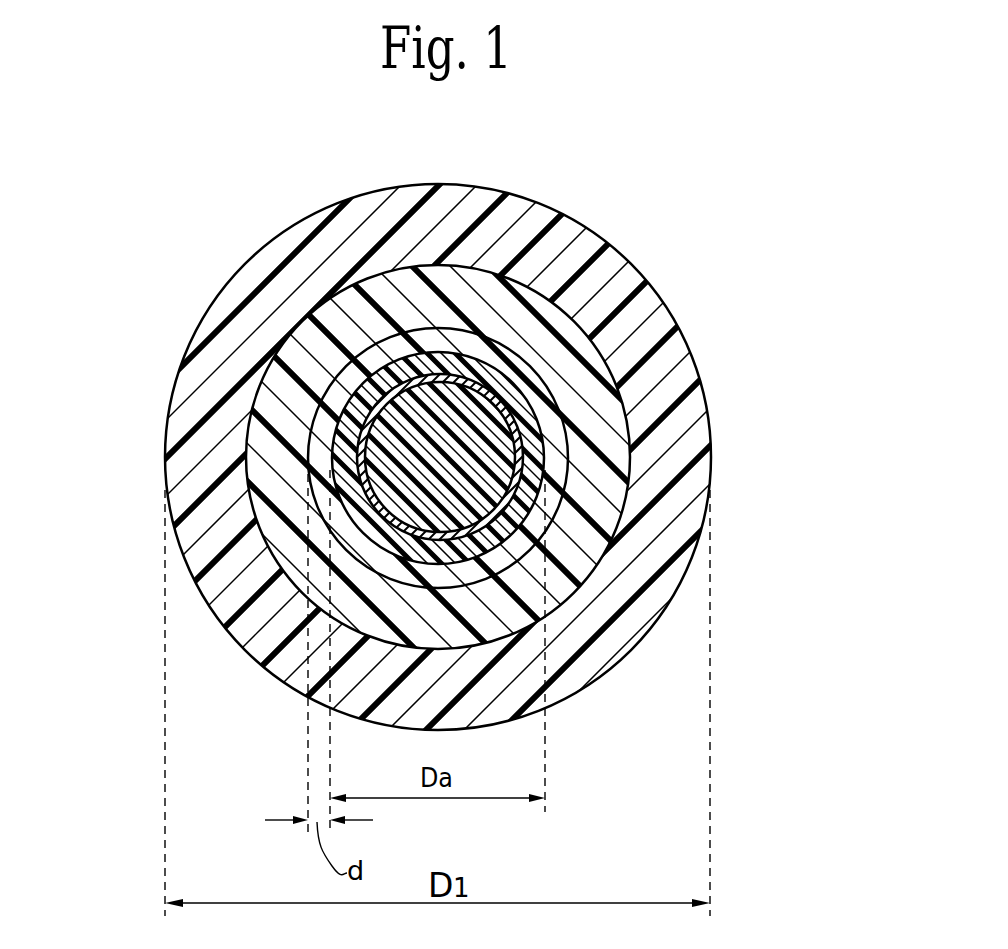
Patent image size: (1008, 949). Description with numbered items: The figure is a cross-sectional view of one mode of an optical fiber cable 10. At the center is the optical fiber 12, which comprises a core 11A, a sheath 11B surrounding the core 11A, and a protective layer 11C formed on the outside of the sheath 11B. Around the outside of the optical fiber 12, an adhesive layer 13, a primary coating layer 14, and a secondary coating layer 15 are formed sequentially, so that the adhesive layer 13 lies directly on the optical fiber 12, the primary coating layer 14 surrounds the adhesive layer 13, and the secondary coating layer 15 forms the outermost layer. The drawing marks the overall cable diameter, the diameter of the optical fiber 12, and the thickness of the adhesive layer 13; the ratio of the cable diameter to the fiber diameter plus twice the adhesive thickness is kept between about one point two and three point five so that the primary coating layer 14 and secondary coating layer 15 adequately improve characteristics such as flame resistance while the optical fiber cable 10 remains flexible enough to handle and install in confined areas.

The optical fiber cable 10 is at (123, 237).
The core 11A is at (450, 407).
The sheath 11B is at (520, 420).
The protective layer 11C is at (532, 442).
The optical fiber 12 is at (561, 433).
The adhesive layer 13 is at (557, 483).
The primary coating layer 14 is at (570, 555).
The secondary coating layer 15 is at (617, 650).